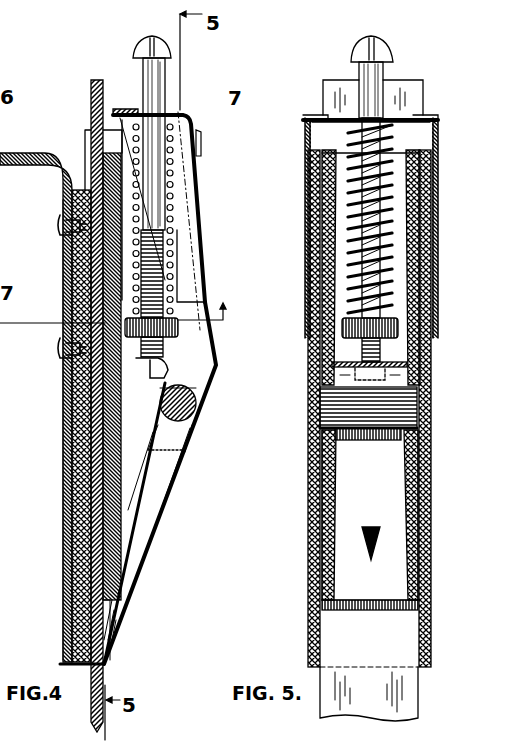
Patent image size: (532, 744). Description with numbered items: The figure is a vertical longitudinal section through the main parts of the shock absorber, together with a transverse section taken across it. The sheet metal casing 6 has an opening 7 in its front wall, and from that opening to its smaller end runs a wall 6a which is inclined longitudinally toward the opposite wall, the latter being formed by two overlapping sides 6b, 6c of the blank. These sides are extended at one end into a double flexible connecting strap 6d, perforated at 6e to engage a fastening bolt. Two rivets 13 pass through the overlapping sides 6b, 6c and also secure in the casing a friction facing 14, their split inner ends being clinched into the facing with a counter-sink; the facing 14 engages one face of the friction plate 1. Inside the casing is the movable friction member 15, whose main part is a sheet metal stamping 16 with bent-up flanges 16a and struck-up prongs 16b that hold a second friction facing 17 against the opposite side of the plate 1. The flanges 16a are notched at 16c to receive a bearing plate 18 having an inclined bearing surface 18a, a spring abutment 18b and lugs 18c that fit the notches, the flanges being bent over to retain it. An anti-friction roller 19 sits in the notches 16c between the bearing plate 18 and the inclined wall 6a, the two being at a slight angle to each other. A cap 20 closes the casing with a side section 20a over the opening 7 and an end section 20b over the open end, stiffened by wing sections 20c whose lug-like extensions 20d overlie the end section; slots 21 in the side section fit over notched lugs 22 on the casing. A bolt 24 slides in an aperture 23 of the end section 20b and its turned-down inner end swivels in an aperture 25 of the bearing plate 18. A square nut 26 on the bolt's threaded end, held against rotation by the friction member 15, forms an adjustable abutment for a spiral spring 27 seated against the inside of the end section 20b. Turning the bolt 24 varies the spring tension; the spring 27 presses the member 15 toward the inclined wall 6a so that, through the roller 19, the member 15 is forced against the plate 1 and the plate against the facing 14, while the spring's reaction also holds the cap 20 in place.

In FIG. 4, the friction plate 1 is at (97, 80).
In FIG. 5, the friction plate 1 is at (424, 82).
In FIG. 4, the casing 6 is at (132, 565).
In FIG. 5, the casing 6 is at (432, 505).
In FIG. 4, the inclined wall 6a is at (150, 500).
In FIG. 4, the overlapping side 6b is at (66, 488).
In FIG. 4, the overlapping side 6c is at (66, 525).
In FIG. 4, the double flexible connecting strap 6d is at (64, 180).
In FIG. 4, the perforation 6e is at (22, 152).
In FIG. 4, the opening 7 is at (208, 240).
In FIG. 5, the opening 7 is at (440, 252).
In FIG. 4, the rivets 13 is at (58, 238).
In FIG. 4, the friction facing 14 is at (80, 430).
In FIG. 5, the friction facing 14 is at (420, 358).
In FIG. 4, the movable friction member 15 is at (150, 466).
In FIG. 5, the movable friction member 15 is at (400, 488).
In FIG. 4, the sheet metal stamping 16 is at (120, 590).
In FIG. 5, the sheet metal stamping 16 is at (400, 555).
In FIG. 4, the flanges 16a is at (160, 482).
In FIG. 5, the flanges 16a is at (312, 448).
In FIG. 4, the struck-up prongs 16b is at (92, 550).
In FIG. 5, the struck-up prongs 16b is at (362, 528).
In FIG. 4, the notches 16c is at (200, 372).
In FIG. 5, the notches 16c is at (325, 380).
In FIG. 4, the friction facing 17 is at (136, 518).
In FIG. 4, the bearing plate 18 is at (172, 440).
In FIG. 5, the bearing plate 18 is at (405, 364).
In FIG. 4, the inclined bearing surface 18a is at (196, 412).
In FIG. 5, the inclined bearing surface 18a is at (352, 440).
In FIG. 4, the spring abutment 18b is at (176, 355).
In FIG. 5, the lugs 18c is at (320, 400).
In FIG. 4, the anti-friction roller 19 is at (196, 396).
In FIG. 5, the anti-friction roller 19 is at (380, 440).
In FIG. 4, the cap 20 is at (196, 190).
In FIG. 5, the cap 20 is at (440, 196).
In FIG. 4, the side section 20a is at (208, 250).
In FIG. 4, the end section 20b is at (190, 120).
In FIG. 5, the end section 20b is at (390, 118).
In FIG. 4, the wing sections 20c is at (187, 180).
In FIG. 5, the wing sections 20c is at (440, 162).
In FIG. 4, the lug-like extensions 20d is at (124, 108).
In FIG. 5, the lug-like extensions 20d is at (308, 116).
In FIG. 4, the slots 21 is at (205, 128).
In FIG. 4, the notched lugs 22 is at (203, 140).
In FIG. 4, the aperture 23 is at (170, 115).
In FIG. 4, the bolt 24 is at (165, 62).
In FIG. 5, the bolt 24 is at (380, 38).
In FIG. 4, the aperture 25 is at (140, 380).
In FIG. 5, the aperture 25 is at (384, 360).
In FIG. 4, the nut 26 is at (180, 322).
In FIG. 5, the nut 26 is at (400, 322).
In FIG. 4, the spiral spring 27 is at (190, 165).
In FIG. 5, the spiral spring 27 is at (388, 212).